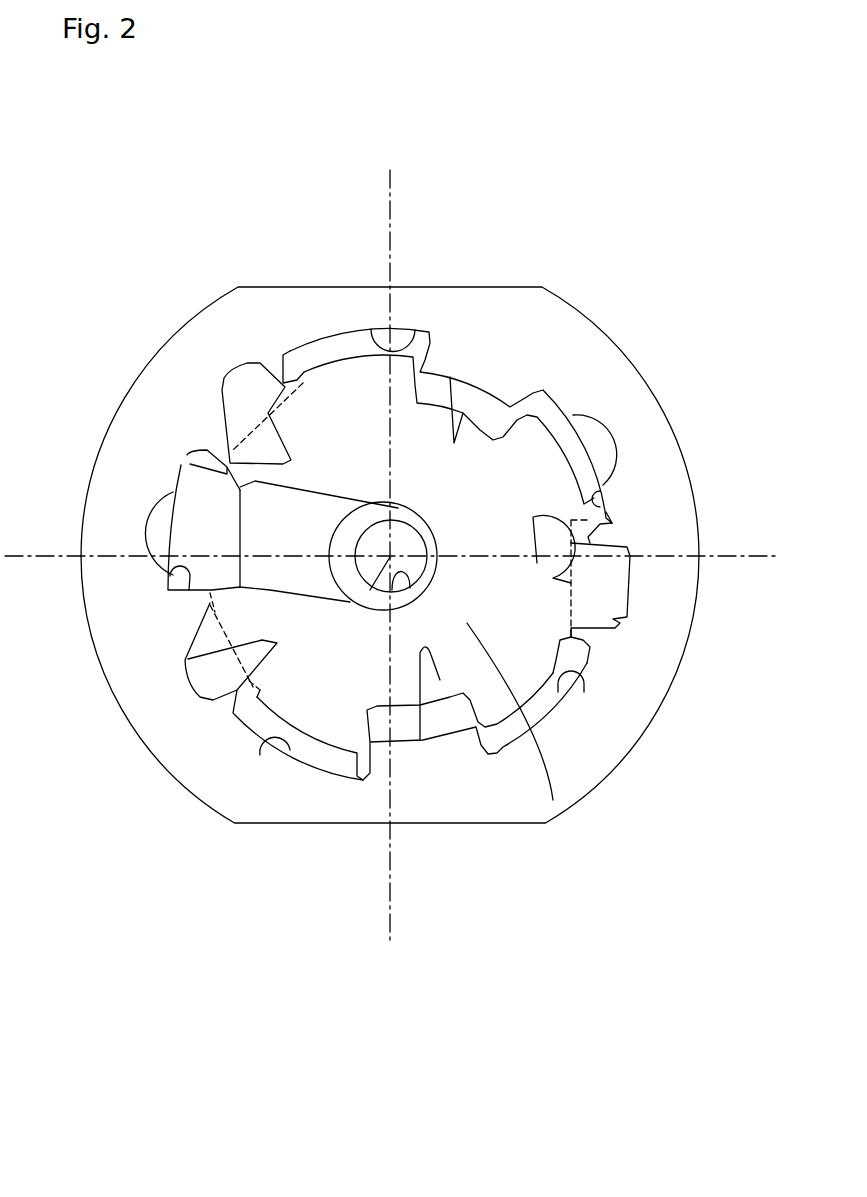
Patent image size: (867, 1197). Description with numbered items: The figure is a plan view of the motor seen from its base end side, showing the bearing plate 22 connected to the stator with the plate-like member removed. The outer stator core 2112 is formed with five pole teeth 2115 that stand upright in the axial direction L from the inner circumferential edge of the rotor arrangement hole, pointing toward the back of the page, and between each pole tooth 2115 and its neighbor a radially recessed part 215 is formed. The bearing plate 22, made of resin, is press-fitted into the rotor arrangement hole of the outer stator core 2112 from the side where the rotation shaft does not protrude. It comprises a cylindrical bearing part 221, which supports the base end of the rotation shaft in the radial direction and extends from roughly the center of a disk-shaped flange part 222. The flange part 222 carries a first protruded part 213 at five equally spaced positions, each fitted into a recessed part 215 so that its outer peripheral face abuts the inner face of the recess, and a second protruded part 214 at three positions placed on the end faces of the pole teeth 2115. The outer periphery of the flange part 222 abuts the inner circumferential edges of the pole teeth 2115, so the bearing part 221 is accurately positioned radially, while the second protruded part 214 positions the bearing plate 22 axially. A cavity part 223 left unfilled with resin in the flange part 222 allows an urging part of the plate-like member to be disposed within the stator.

The bearing plate 22 is at (418, 452).
The first protruded part 213 is at (343, 333).
The second protruded part 214 is at (223, 377).
The recessed part 215 is at (407, 328).
The bearing part 221 is at (390, 578).
The flange part 222 is at (553, 800).
The cavity part 223 is at (222, 538).
The pole teeth 2115 is at (456, 440).
The outer stator core 2112 is at (228, 780).
The axial direction L is at (390, 560).